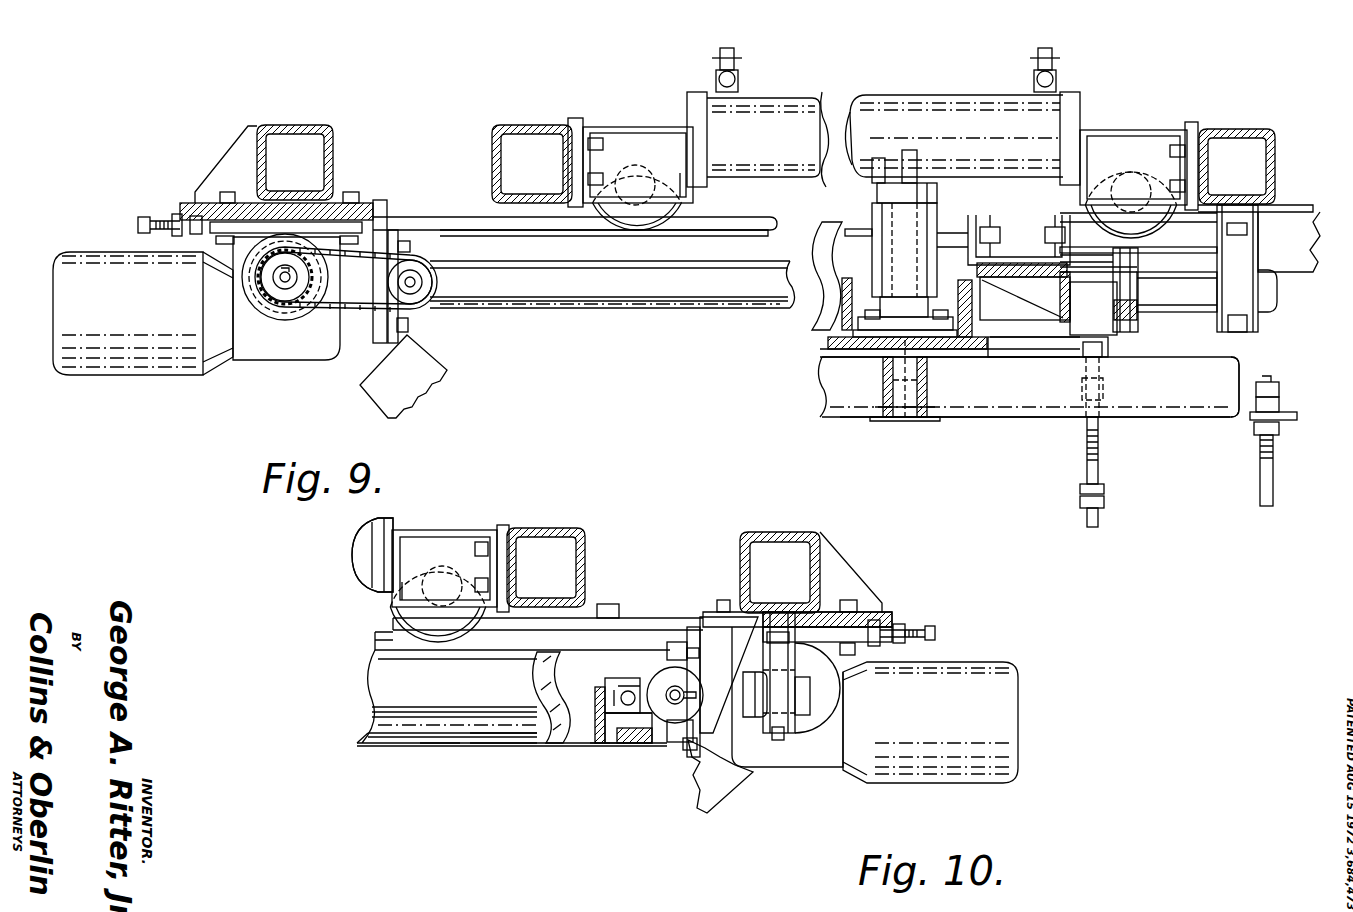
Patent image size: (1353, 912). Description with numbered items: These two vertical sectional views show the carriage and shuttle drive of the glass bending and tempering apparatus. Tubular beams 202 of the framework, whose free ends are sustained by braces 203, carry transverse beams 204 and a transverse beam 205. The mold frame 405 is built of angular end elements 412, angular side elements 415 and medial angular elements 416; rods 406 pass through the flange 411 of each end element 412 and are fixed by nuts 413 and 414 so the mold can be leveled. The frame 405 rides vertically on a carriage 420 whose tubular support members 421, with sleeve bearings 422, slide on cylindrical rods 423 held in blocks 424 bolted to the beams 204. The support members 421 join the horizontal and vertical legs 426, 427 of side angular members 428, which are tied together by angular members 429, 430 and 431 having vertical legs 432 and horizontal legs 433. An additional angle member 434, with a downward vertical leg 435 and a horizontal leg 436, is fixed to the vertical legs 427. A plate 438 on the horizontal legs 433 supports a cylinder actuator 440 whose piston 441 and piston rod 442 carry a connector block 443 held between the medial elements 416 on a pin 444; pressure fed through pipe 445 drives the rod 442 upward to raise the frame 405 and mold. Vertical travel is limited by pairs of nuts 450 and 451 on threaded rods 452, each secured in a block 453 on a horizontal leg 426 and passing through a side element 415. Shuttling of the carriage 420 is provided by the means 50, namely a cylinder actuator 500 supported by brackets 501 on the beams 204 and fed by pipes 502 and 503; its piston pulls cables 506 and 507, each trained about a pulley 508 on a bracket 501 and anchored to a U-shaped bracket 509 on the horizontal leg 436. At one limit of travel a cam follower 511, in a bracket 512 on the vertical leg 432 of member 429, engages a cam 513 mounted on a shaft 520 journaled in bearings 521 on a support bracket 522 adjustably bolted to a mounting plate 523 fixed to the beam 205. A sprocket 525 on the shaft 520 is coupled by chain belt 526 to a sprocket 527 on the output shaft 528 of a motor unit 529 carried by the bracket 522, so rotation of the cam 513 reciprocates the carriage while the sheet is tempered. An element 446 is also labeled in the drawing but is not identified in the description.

In FIG. 9, the shuttle moving means 50 is at (884, 94).
In FIG. 10, the shuttle moving means 50 is at (352, 537).
In FIG. 9, the tubular members or beams 202 is at (423, 233).
In FIG. 10, the tubular members or beams 202 is at (570, 634).
In FIG. 9, the braces 203 is at (422, 368).
In FIG. 10, the braces 203 is at (717, 797).
In FIG. 9, the transverse beams 204 is at (527, 126).
In FIG. 10, the transverse beams 204 is at (562, 529).
In FIG. 9, the transversely disposed beam 205 is at (288, 124).
In FIG. 10, the transversely disposed beam 205 is at (790, 532).
In FIG. 9, the frame 405 is at (928, 418).
In FIG. 9, the rods 406 is at (1264, 480).
In FIG. 9, the flange 411 is at (1292, 412).
In FIG. 9, the angular end element 412 is at (1241, 371).
In FIG. 9, the nut 413 is at (1264, 380).
In FIG. 9, the nut 414 is at (1256, 424).
In FIG. 9, the angular side elements 415 is at (860, 377).
In FIG. 9, the medial angular elements 416 is at (866, 412).
In FIG. 9, the carriage 420 is at (810, 255).
In FIG. 10, the carriage 420 is at (392, 747).
In FIG. 9, the tubular support members 421 is at (1100, 273).
In FIG. 10, the tubular support members 421 is at (370, 726).
In FIG. 9, the sleeve bearings 422 is at (1155, 245).
In FIG. 9, the cylindrical rods 423 is at (650, 298).
In FIG. 10, the cylindrical rods 423 is at (627, 637).
In FIG. 9, the blocks 424 is at (1241, 253).
In FIG. 10, the blocks 424 is at (787, 737).
In FIG. 9, the horizontal flange or leg 426 is at (1108, 347).
In FIG. 10, the horizontal flange or leg 426 is at (487, 737).
In FIG. 9, the vertical flange or leg 427 is at (1269, 298).
In FIG. 9, the side angular members 428 is at (1037, 322).
In FIG. 10, the side angular members 428 is at (434, 748).
In FIG. 10, the angular member 429 is at (598, 746).
In FIG. 9, the angular member 430 is at (795, 288).
In FIG. 9, the angular member 431 is at (958, 296).
In FIG. 9, the vertical legs 432 is at (828, 317).
In FIG. 10, the vertical legs 432 is at (595, 715).
In FIG. 9, the horizontal legs 433 is at (828, 335).
In FIG. 10, the horizontal legs 433 is at (632, 744).
In FIG. 9, the additional angle member 434 is at (1138, 284).
In FIG. 9, the vertical leg 435 is at (1070, 302).
In FIG. 9, the horizontal leg 436 is at (1025, 297).
In FIG. 9, the plate 438 is at (905, 343).
In FIG. 9, the cylinder actuator 440 is at (922, 215).
In FIG. 9, the piston 441 is at (873, 209).
In FIG. 9, the piston rod 442 is at (898, 350).
In FIG. 9, the connector block 443 is at (900, 372).
In FIG. 9, the pin 444 is at (902, 392).
In FIG. 9, the pipe 445 is at (875, 191).
In FIG. 9, the pin 446 is at (903, 160).
In FIG. 9, the nuts 450 is at (1103, 500).
In FIG. 9, the nuts 451 is at (1105, 395).
In FIG. 9, the threaded rods 452 is at (1099, 441).
In FIG. 9, the block 453 is at (1103, 357).
In FIG. 9, the cylinder actuator 500 is at (765, 148).
In FIG. 10, the cylinder actuator 500 is at (363, 574).
In FIG. 9, the brackets 501 is at (648, 127).
In FIG. 10, the brackets 501 is at (450, 532).
In FIG. 9, the pipe 502 is at (712, 50).
In FIG. 9, the pipe 503 is at (1030, 50).
In FIG. 9, the cable 506 is at (688, 236).
In FIG. 10, the cable 506 is at (413, 637).
In FIG. 9, the cable 507 is at (960, 137).
In FIG. 9, the pulley 508 is at (630, 222).
In FIG. 10, the pulley 508 is at (398, 613).
In FIG. 9, the U-shaped bracket 509 is at (992, 258).
In FIG. 10, the cam follower 511 is at (633, 678).
In FIG. 10, the bracket 512 is at (628, 714).
In FIG. 10, the cam 513 is at (729, 673).
In FIG. 9, the shaft 520 is at (420, 298).
In FIG. 10, the shaft 520 is at (678, 690).
In FIG. 9, the bearings 521 is at (411, 246).
In FIG. 10, the bearings 521 is at (688, 740).
In FIG. 9, the support bracket 522 is at (376, 338).
In FIG. 10, the support bracket 522 is at (869, 618).
In FIG. 9, the mounting plate 523 is at (366, 203).
In FIG. 10, the mounting plate 523 is at (868, 612).
In FIG. 9, the sprocket 525 is at (408, 326).
In FIG. 9, the chain belt 526 is at (337, 310).
In FIG. 9, the sprocket 527 is at (272, 290).
In FIG. 9, the output shaft 528 is at (285, 284).
In FIG. 9, the motor unit 529 is at (132, 366).
In FIG. 10, the motor unit 529 is at (992, 680).